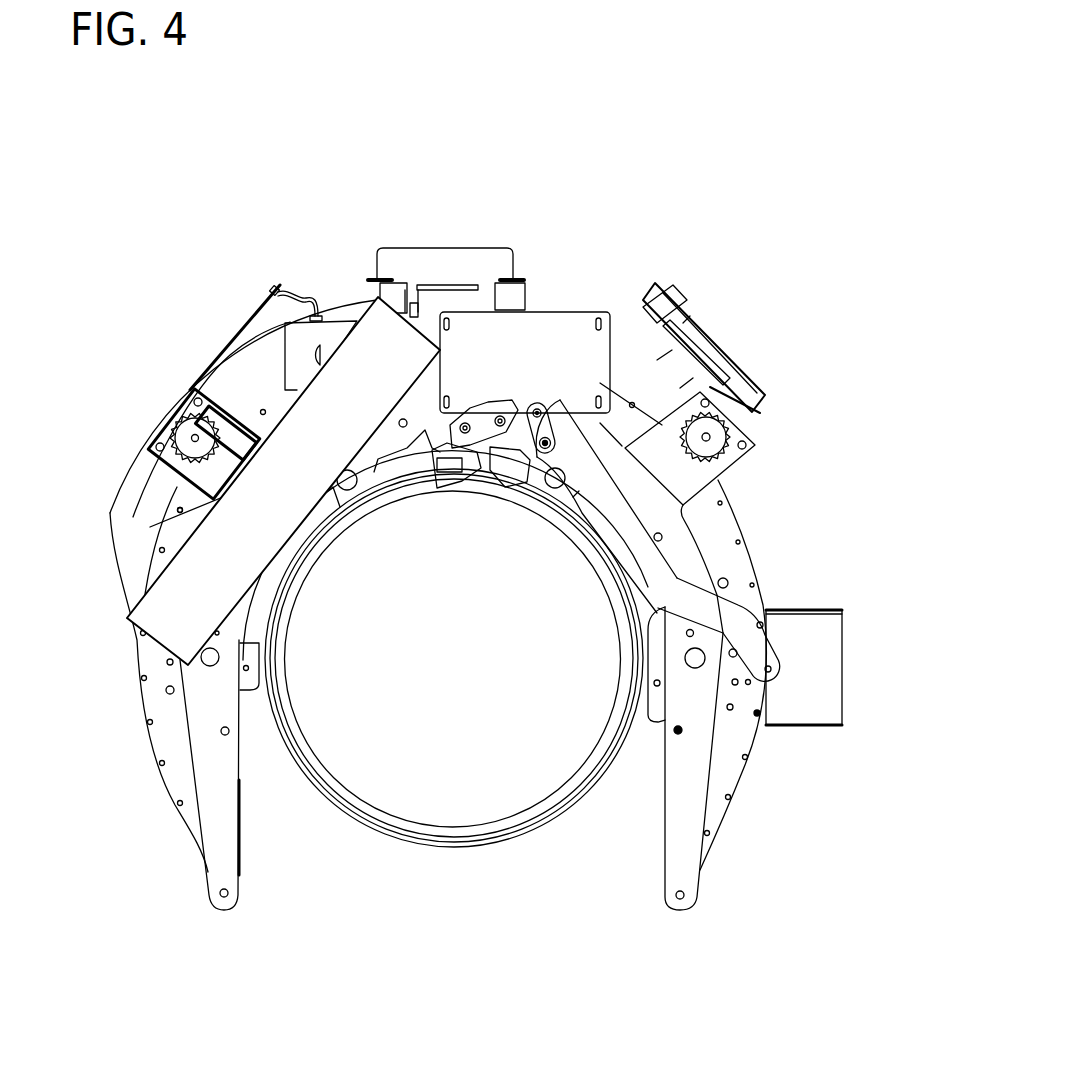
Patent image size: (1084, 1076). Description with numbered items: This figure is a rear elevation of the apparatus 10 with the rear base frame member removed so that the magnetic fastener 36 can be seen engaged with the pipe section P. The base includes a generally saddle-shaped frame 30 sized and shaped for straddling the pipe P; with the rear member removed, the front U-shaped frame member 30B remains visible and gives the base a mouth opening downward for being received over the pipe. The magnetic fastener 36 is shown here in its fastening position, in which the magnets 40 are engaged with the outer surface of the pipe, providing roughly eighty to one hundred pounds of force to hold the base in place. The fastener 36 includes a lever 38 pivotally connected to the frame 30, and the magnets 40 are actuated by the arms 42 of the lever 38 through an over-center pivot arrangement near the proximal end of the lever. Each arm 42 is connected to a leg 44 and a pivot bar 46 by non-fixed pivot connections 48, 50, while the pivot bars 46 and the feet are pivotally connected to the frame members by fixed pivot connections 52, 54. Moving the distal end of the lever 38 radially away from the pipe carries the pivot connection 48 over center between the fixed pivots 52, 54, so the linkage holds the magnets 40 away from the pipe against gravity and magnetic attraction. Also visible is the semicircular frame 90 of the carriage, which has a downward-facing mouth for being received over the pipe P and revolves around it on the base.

The pipe cutting apparatus 10 is at (716, 146).
The frame 30 is at (198, 874).
The front U-shaped frame member 30B is at (663, 872).
The magnetic fastener 36 is at (483, 506).
The lever 38 is at (773, 650).
The magnets 40 is at (427, 477).
The arms 42 is at (657, 583).
The legs 44 is at (447, 473).
The pivot bars 46 is at (547, 430).
The pivot connection 48 is at (507, 405).
The pivot connection 50 is at (539, 410).
The fixed pivot connection 52 is at (500, 468).
The fixed pivot connection 54 is at (478, 410).
The semicircular frame 90 is at (145, 761).
The pipe section P is at (517, 845).